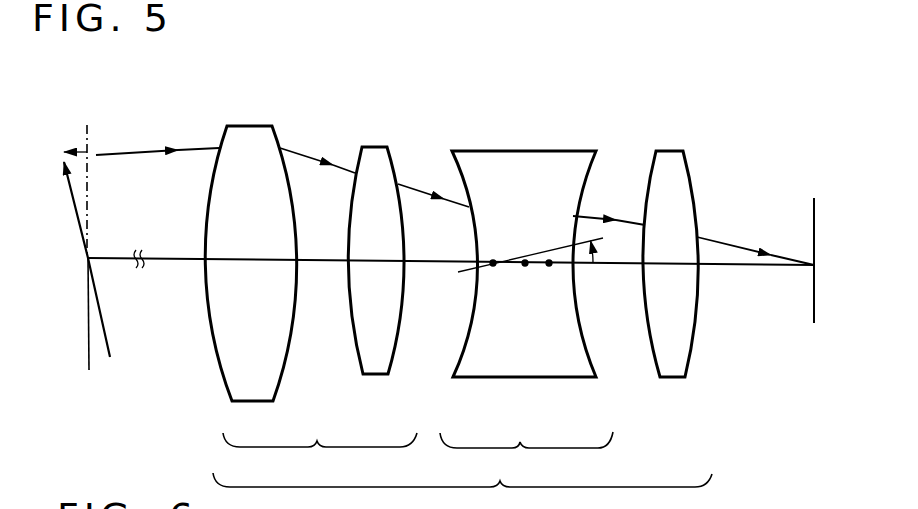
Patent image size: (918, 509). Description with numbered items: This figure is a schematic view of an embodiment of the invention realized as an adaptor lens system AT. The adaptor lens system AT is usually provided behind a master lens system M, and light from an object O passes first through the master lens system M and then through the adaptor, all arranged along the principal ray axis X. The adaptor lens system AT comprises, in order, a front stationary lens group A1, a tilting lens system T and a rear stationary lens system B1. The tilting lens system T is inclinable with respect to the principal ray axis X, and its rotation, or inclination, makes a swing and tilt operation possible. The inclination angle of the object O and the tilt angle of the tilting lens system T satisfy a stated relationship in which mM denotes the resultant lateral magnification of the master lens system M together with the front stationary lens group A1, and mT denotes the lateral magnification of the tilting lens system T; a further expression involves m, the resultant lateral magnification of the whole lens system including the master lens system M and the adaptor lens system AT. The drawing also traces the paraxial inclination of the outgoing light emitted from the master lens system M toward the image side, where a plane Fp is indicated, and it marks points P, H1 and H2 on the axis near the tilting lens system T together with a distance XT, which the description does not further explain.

The master lens system M is at (292, 86).
The adaptor lens system AT is at (523, 243).
The front stationary lens group A1 is at (375, 374).
The tilting lens system T is at (528, 372).
The rear stationary lens system B1 is at (679, 373).
The focal plane Fp is at (815, 216).
The object O is at (93, 298).
The point P is at (530, 267).
The front principal point H1 is at (516, 278).
The rear principal point H2 is at (546, 278).
The distance XT is at (593, 266).
The principal ray axis X is at (725, 266).
The resultant lateral magnification of master lens system and front stationary lens mM is at (320, 458).
The lateral magnification of tilting lens group mT is at (526, 458).
The resultant lateral magnification of whole lens system m is at (462, 491).